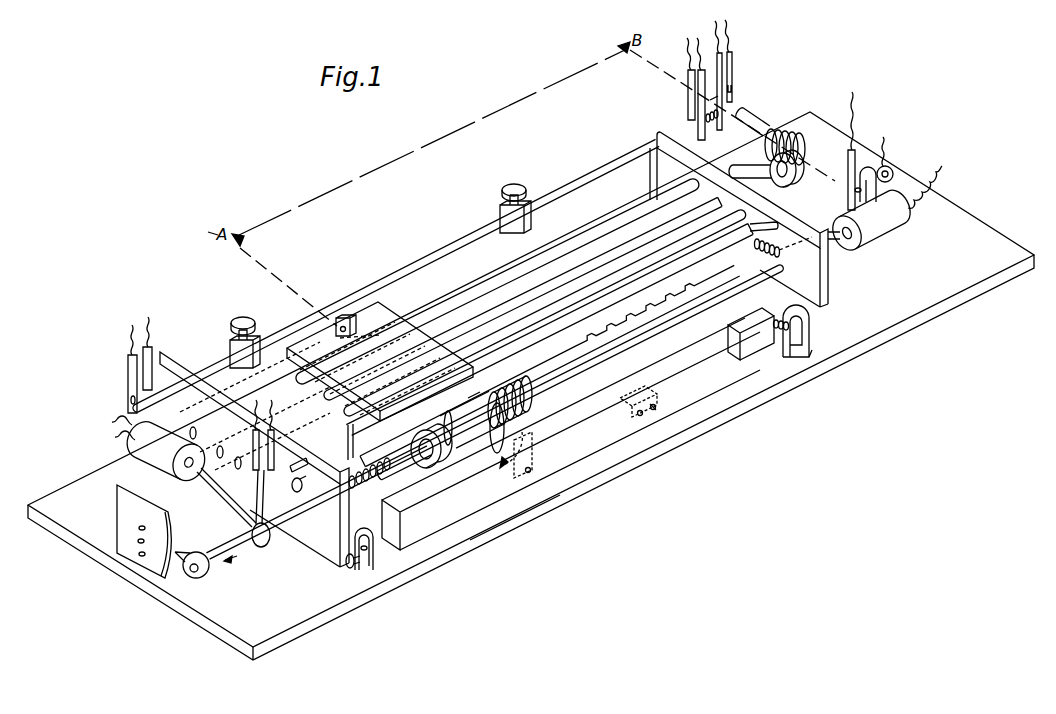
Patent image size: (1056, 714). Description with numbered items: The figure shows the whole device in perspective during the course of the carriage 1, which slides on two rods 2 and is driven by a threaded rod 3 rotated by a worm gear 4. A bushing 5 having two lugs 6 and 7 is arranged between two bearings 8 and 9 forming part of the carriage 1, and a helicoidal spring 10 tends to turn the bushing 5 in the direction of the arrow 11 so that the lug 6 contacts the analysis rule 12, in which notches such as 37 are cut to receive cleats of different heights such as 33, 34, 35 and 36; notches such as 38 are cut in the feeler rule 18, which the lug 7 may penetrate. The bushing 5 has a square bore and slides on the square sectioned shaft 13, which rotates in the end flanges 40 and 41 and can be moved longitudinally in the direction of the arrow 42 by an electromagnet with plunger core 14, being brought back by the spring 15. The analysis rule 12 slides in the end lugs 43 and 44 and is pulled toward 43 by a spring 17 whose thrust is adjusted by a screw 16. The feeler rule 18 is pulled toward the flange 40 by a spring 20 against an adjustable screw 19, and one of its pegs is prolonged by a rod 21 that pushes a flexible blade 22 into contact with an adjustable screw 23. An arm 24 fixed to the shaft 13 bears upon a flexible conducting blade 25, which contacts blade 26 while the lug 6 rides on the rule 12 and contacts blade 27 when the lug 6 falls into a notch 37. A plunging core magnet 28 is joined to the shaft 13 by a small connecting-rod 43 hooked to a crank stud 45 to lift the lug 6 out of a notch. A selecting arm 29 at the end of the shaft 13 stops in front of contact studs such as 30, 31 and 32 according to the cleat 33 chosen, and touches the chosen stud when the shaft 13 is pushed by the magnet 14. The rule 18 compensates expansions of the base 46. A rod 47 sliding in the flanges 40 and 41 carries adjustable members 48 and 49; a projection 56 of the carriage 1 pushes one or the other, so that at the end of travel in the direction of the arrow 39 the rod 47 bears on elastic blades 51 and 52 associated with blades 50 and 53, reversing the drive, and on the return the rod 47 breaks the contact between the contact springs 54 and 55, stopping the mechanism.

The carriage 1 is at (377, 312).
The rods 2 is at (647, 263).
The threaded rod 3 is at (563, 277).
The worm gear 4 is at (786, 133).
The bushing 5 is at (442, 452).
The lug 6 is at (482, 437).
The lug 7 is at (444, 424).
The bearing 8 is at (530, 418).
The bearing 9 is at (428, 462).
The helicoidal spring 10 is at (532, 400).
The arrow 11 is at (512, 445).
The analysis rule 12 is at (455, 510).
The square sectioned shaft 13 is at (298, 520).
The electromagnet with plunger core 14 is at (905, 215).
The spring 15 is at (365, 482).
The screw 16 is at (352, 570).
The spring 17 is at (786, 324).
The feeler rule 18 is at (557, 348).
The adjustable screw 19 is at (293, 484).
The spring 20 is at (775, 248).
The rod 21 is at (831, 215).
The flexible blade 22 is at (855, 170).
The adjustable screw 23 is at (893, 172).
The arm 24 is at (266, 497).
The flexible conducting blade 25 is at (268, 468).
The blade 26 is at (253, 455).
The flexible blade 27 is at (297, 455).
The plunging core magnet 28 is at (153, 453).
The selecting arm 29 is at (200, 578).
The contact stud 30 is at (142, 554).
The contact stud 31 is at (141, 541).
The contact stud 32 is at (142, 528).
The cleat 33 is at (563, 507).
The cleat 34 is at (642, 415).
The cleat 35 is at (655, 408).
The cleat 36 is at (752, 356).
The notch 37 is at (567, 452).
The notch 38 is at (472, 400).
The arrow 39 is at (352, 340).
The end flange 40 is at (165, 356).
The end flange 41 is at (697, 155).
The arrow 42 is at (239, 562).
The end lug 43 is at (358, 532).
The end lug 44 is at (807, 342).
The crank stud 45 is at (268, 544).
The base 46 is at (924, 295).
The rod 47 is at (422, 264).
The member 48 is at (232, 340).
The member 49 is at (505, 212).
The blade 50 is at (690, 100).
The elastic blade 51 is at (720, 84).
The elastic blade 52 is at (732, 62).
The blade 53 is at (733, 72).
The contact spring 54 is at (128, 372).
The contact spring 55 is at (145, 352).
The projection 56 is at (344, 316).